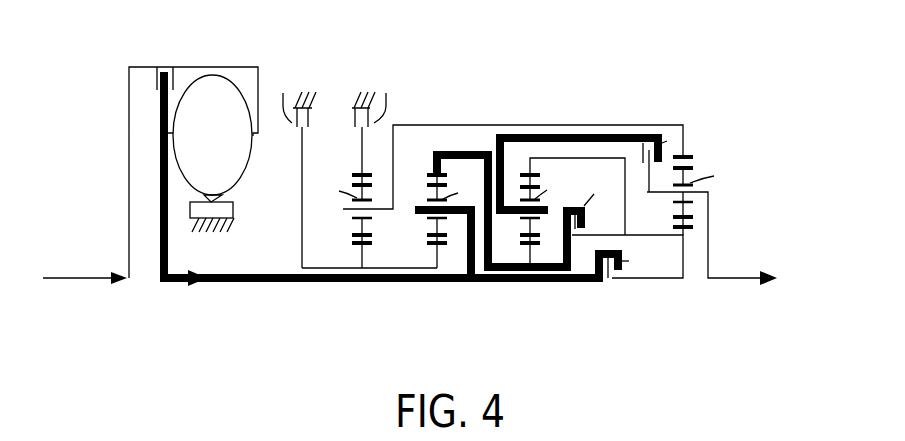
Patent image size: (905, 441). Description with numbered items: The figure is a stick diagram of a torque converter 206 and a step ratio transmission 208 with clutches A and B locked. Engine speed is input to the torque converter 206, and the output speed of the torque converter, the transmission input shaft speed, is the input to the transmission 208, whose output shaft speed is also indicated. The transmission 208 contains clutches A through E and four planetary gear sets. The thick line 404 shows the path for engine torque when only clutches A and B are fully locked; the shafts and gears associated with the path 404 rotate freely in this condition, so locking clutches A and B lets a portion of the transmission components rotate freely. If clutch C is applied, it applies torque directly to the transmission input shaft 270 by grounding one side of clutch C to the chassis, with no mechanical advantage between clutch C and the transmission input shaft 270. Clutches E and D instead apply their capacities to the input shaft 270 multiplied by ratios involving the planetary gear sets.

The torque converter 206 is at (242, 62).
The step ratio transmission 208 is at (540, 95).
The transmission input shaft 270 is at (162, 268).
The path 404 is at (287, 282).